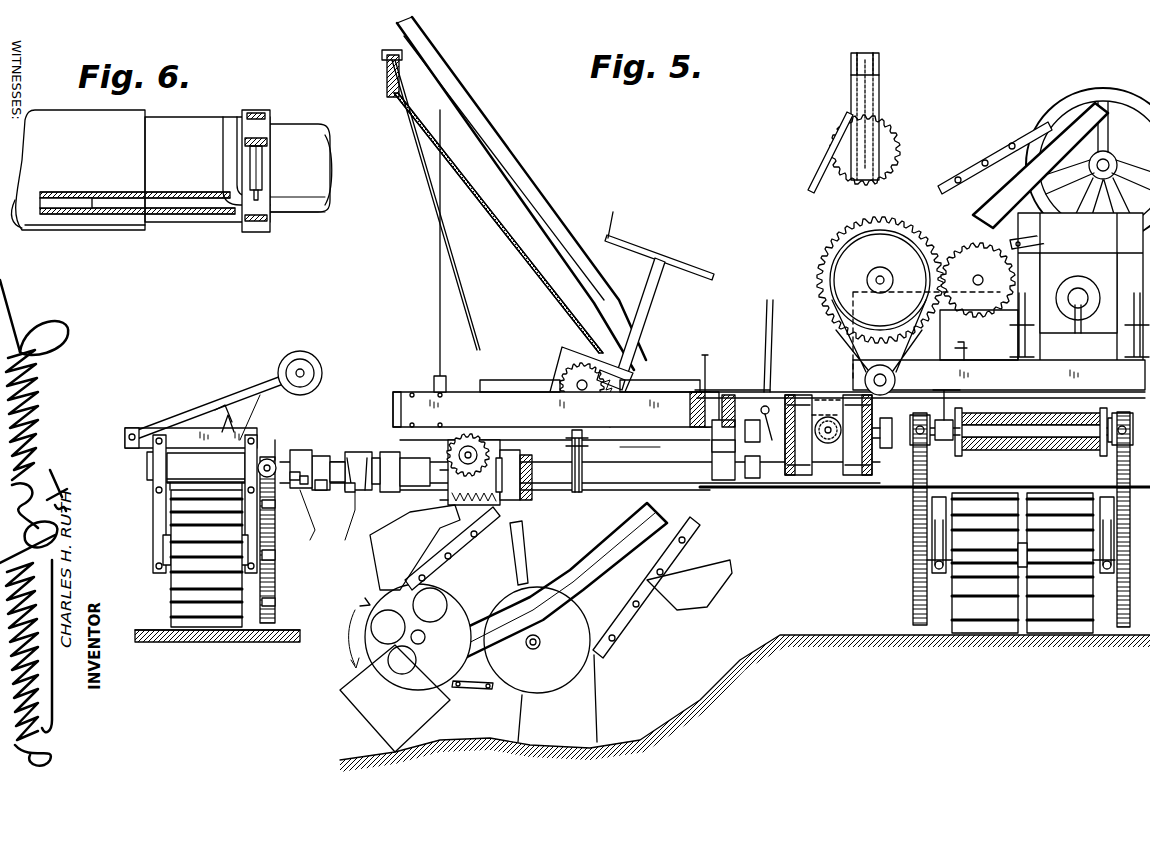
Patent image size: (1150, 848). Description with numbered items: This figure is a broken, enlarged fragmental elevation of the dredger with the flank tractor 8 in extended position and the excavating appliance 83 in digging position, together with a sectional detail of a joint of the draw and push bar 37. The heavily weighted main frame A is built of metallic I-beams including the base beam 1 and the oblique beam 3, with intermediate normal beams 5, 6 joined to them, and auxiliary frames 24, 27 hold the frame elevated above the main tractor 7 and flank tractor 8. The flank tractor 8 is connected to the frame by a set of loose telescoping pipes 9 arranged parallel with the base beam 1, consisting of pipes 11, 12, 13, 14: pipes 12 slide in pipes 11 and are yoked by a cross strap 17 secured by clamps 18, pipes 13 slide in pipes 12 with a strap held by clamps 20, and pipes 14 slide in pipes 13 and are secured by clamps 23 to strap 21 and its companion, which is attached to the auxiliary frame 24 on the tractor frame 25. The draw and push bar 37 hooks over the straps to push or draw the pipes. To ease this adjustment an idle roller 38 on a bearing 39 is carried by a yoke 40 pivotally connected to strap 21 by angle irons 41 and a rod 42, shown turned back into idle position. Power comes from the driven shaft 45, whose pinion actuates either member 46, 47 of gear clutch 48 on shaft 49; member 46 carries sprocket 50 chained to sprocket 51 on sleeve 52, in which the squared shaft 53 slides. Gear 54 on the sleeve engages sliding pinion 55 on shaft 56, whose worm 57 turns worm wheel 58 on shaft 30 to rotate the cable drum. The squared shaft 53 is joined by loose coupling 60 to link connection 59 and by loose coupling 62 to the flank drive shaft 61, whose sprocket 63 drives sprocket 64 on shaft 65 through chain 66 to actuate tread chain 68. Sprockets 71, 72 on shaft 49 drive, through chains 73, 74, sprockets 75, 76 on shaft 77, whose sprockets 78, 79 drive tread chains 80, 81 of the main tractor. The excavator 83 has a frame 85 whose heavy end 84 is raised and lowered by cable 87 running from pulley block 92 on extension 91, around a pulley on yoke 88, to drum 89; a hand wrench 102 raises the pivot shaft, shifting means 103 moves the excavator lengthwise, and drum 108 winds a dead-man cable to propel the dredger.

In FIG. 5, the main or base beam 1 is at (462, 406).
In FIG. 5, the oblique beam 3 is at (665, 412).
In FIG. 5, the intermediate normal beam 5 is at (950, 398).
In FIG. 5, the intermediate normal beam 6 is at (720, 404).
In FIG. 5, the main tractor 7 is at (853, 584).
In FIG. 5, the flank tractor 8 is at (118, 596).
In FIG. 6, the set of loose telescoping pipes 9 is at (280, 82).
In FIG. 5, the set of loose telescoping pipes 9 is at (359, 422).
In FIG. 6, the pair of pipes 11 is at (67, 120).
In FIG. 5, the pair of pipes 11 is at (850, 500).
In FIG. 6, the pair of pipes 12 is at (176, 122).
In FIG. 5, the pair of pipes 12 is at (385, 455).
In FIG. 6, the pair of pipes 13 is at (314, 124).
In FIG. 5, the pair of pipes 13 is at (326, 455).
In FIG. 5, the pair of pipes 14 is at (300, 450).
In FIG. 6, the cross strap 17 is at (268, 160).
In FIG. 6, the clamps 18 is at (252, 232).
In FIG. 5, the clamps 18 is at (355, 538).
In FIG. 5, the clamps 20 is at (318, 528).
In FIG. 5, the strap 21 is at (1098, 515).
In FIG. 5, the clamps 23 is at (155, 478).
In FIG. 5, the auxiliary frame 24 is at (153, 508).
In FIG. 5, the tractor frame 25 is at (160, 555).
In FIG. 5, the auxiliary frame 27 is at (932, 515).
In FIG. 5, the shaft 30 is at (466, 450).
In FIG. 6, the draw and push bar 37 is at (224, 143).
In FIG. 5, the idle roller 38 is at (308, 352).
In FIG. 5, the bearing 39 is at (306, 373).
In FIG. 5, the yoke 40 is at (245, 355).
In FIG. 5, the angle irons 41 is at (244, 432).
In FIG. 5, the rod 42 is at (124, 430).
In FIG. 5, the driven shaft 45 is at (829, 415).
In FIG. 5, the gear faced member 46 is at (790, 478).
In FIG. 5, the gear clutch member 47 is at (862, 478).
In FIG. 5, the gear clutch 48 is at (826, 366).
In FIG. 5, the shaft 49 is at (745, 445).
In FIG. 5, the sprocket 50 is at (760, 440).
In FIG. 5, the sprocket 51 is at (760, 470).
In FIG. 5, the sleeve 52 is at (640, 448).
In FIG. 5, the squared shaft 53 is at (400, 490).
In FIG. 5, the gear 54 is at (572, 448).
In FIG. 5, the sliding pinion 55 is at (535, 500).
In FIG. 5, the shaft 56 is at (522, 500).
In FIG. 5, the worm 57 is at (470, 492).
In FIG. 5, the worm wheel 58 is at (470, 448).
In FIG. 5, the link connection 59 is at (327, 488).
In FIG. 5, the loose coupling 60 is at (350, 490).
In FIG. 5, the flank drive shaft 61 is at (294, 480).
In FIG. 5, the loose coupling 62 is at (305, 484).
In FIG. 5, the sprocket 63 is at (274, 445).
In FIG. 5, the sprocket 64 is at (285, 480).
In FIG. 5, the shaft 65 is at (278, 560).
In FIG. 5, the chain 66 is at (278, 600).
In FIG. 5, the tread chain 68 is at (180, 594).
In FIG. 5, the sprocket 71 is at (938, 445).
In FIG. 5, the sprocket 72 is at (1112, 445).
In FIG. 5, the chain 73 is at (915, 500).
In FIG. 5, the chain 74 is at (1128, 500).
In FIG. 5, the sprocket 75 is at (912, 594).
In FIG. 5, the sprocket 76 is at (1140, 585).
In FIG. 5, the shaft 77 is at (906, 553).
In FIG. 5, the sprocket 78 is at (950, 588).
In FIG. 5, the sprocket 79 is at (1108, 588).
In FIG. 5, the tread chain 80 is at (985, 563).
In FIG. 5, the tread chain 81 is at (1060, 563).
In FIG. 5, the excavating appliance 83 is at (1059, 83).
In FIG. 5, the heavy end 84 is at (405, 668).
In FIG. 5, the excavator frame 85 is at (1006, 184).
In FIG. 5, the cable 87 is at (404, 132).
In FIG. 5, the yoke 88 is at (523, 548).
In FIG. 5, the drum 89 is at (569, 337).
In FIG. 5, the extension 91 is at (430, 62).
In FIG. 5, the pulley block 92 is at (388, 72).
In FIG. 5, the hand wrench 102 is at (640, 330).
In FIG. 5, the shifting means 103 is at (560, 372).
In FIG. 5, the drum 108 is at (1015, 418).
In FIG. 5, the main frame A is at (419, 366).